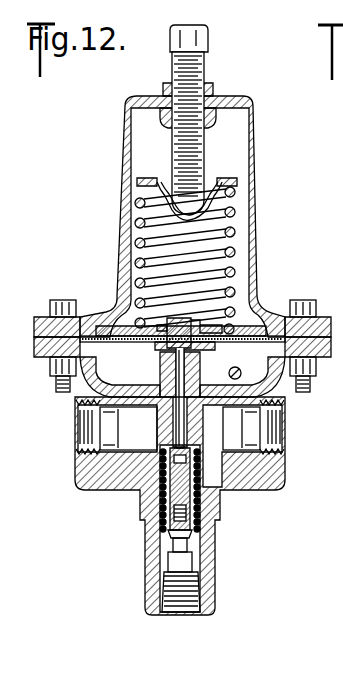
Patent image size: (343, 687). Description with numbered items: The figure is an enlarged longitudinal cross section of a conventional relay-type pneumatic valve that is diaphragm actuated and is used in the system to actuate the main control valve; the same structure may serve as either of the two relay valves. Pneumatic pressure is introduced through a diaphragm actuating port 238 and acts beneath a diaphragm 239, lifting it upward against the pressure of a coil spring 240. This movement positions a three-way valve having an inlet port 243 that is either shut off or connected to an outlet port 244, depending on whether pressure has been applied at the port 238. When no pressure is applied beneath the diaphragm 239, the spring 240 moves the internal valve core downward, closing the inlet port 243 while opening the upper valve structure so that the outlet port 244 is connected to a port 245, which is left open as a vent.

The diaphragm actuating port 238 is at (239, 369).
The diaphragm 239 is at (250, 336).
The coil spring 240 is at (232, 254).
The inlet port 243 is at (190, 615).
The outlet port 244 is at (80, 432).
The vent port 245 is at (285, 440).